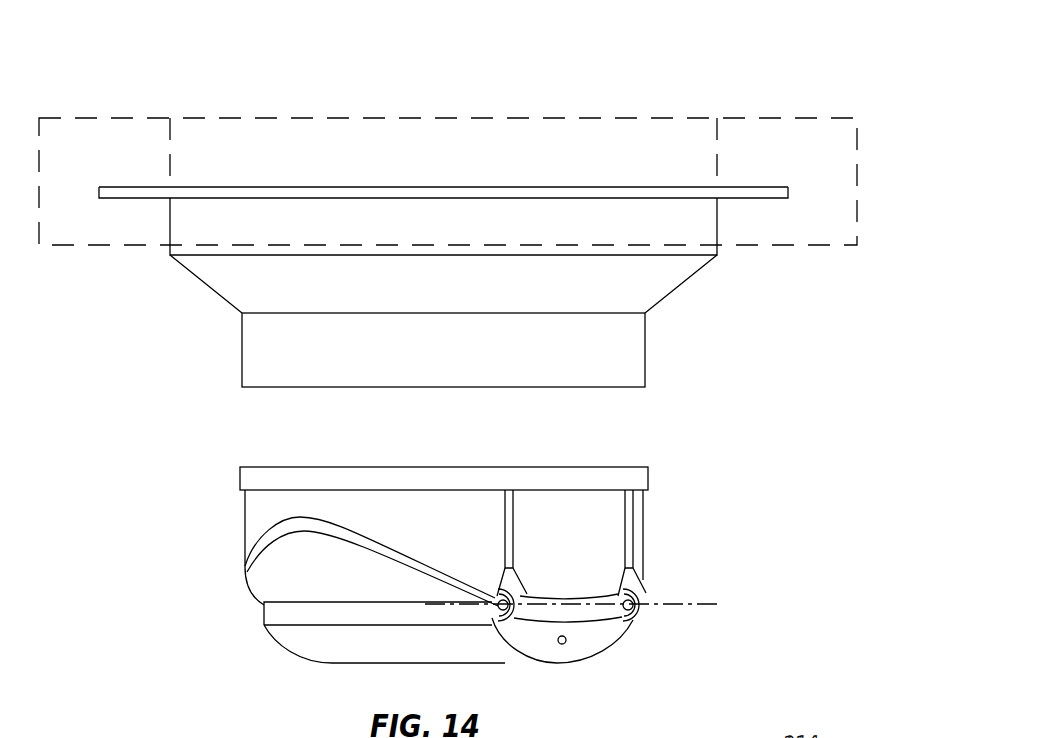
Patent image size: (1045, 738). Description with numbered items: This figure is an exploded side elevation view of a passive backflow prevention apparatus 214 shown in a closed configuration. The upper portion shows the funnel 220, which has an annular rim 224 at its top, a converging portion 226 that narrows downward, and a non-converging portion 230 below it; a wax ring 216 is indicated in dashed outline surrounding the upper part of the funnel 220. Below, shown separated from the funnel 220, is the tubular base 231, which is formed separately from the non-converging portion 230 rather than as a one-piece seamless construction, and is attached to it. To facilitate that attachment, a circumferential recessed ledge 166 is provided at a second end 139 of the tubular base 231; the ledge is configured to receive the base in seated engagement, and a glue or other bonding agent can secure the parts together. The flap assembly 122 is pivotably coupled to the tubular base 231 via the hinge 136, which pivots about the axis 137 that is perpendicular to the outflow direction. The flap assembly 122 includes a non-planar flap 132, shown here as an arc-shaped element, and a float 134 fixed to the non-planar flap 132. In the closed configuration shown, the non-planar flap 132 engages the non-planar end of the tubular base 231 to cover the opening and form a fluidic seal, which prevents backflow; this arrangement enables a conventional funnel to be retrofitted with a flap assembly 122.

The passive backflow prevention apparatus 214 is at (738, 86).
The wax ring 216 is at (860, 160).
The funnel 220 is at (766, 184).
The annular rim 224 is at (140, 187).
The converging portion 226 is at (648, 283).
The non-converging portion 230 is at (620, 348).
The second end 139 is at (282, 466).
The circumferential recessed ledge 166 is at (649, 478).
The non-planar flap 132 is at (283, 572).
The flap assembly 122 is at (247, 611).
The axis 137 is at (469, 607).
The tubular base 231 is at (580, 534).
The hinge 136 is at (664, 582).
The float 134 is at (497, 653).